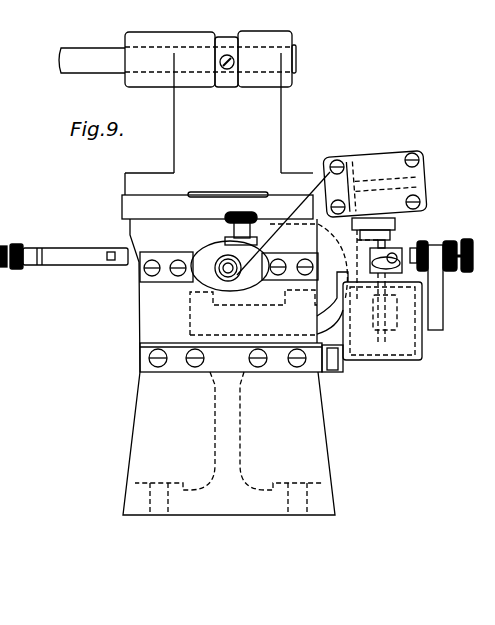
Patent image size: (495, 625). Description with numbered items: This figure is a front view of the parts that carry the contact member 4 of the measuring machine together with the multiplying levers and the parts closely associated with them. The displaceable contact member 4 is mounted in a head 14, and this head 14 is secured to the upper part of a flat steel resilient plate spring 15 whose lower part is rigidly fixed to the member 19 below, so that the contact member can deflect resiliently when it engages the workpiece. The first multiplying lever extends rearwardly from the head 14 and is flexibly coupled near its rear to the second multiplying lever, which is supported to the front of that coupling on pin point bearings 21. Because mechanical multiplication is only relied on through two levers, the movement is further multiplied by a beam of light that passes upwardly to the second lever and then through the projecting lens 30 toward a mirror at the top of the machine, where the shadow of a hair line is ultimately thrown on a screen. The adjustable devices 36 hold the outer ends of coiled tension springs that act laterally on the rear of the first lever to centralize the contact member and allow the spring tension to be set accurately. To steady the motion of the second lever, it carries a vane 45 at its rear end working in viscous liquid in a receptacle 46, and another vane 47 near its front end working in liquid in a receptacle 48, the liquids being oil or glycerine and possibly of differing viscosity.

The contact member 4 is at (222, 270).
The head 14 is at (212, 257).
The plate spring 15 is at (148, 327).
The member 19 is at (322, 410).
The pin point bearings 21 is at (380, 246).
The projecting lens 30 is at (430, 176).
The adjustable devices 36 is at (464, 268).
The vane 45 is at (0, 318).
The receptacle 46 is at (0, 356).
The vane 47 is at (423, 345).
The receptacle 48 is at (407, 360).